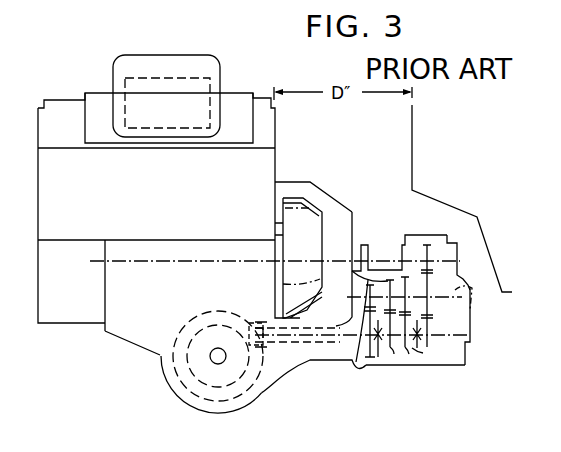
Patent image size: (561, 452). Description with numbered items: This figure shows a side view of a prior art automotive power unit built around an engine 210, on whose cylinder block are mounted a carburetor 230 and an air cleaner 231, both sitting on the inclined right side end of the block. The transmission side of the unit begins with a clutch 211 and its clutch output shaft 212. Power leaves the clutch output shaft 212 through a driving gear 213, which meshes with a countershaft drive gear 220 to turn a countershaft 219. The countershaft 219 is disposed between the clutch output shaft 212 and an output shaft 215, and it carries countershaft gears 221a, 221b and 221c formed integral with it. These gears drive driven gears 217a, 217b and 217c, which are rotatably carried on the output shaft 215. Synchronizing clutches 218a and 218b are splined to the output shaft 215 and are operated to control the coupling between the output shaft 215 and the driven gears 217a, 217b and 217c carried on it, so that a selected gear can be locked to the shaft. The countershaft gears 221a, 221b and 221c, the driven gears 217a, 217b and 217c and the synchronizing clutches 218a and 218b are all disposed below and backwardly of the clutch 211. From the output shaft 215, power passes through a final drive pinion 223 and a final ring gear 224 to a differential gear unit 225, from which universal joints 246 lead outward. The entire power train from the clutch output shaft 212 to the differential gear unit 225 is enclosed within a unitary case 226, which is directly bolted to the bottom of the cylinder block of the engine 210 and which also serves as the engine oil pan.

The engine 210 is at (265, 173).
The clutch 211 is at (312, 203).
The clutch output shaft 212 is at (377, 250).
The driving gear 213 is at (438, 244).
The output shaft 215 is at (458, 332).
The driven gear 217a is at (410, 350).
The driven gear 217b is at (393, 354).
The driven gear 217c is at (358, 372).
The synchronizing clutch 218a is at (466, 362).
The synchronizing clutch 218b is at (379, 357).
The countershaft 219 is at (456, 293).
The countershaft drive gear 220 is at (432, 280).
The countershaft gear 221a is at (410, 276).
The countershaft gear 221b is at (352, 270).
The countershaft gear 221c is at (366, 358).
The final drive pinion 223 is at (258, 322).
The final ring gear 224 is at (188, 386).
The differential gear unit 225 is at (188, 358).
The unitary case 226 is at (312, 359).
The carburetor 230 is at (223, 74).
The air cleaner 231 is at (117, 72).
The universal joint 246 is at (413, 125).